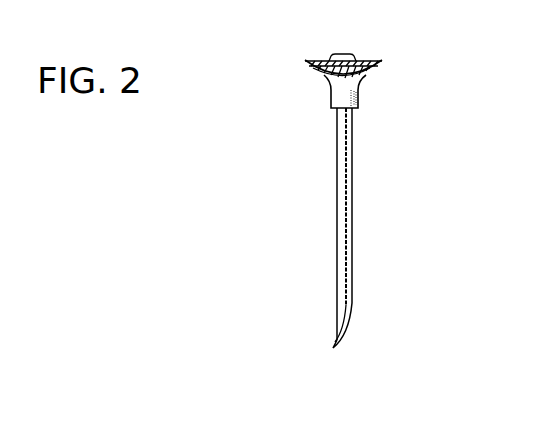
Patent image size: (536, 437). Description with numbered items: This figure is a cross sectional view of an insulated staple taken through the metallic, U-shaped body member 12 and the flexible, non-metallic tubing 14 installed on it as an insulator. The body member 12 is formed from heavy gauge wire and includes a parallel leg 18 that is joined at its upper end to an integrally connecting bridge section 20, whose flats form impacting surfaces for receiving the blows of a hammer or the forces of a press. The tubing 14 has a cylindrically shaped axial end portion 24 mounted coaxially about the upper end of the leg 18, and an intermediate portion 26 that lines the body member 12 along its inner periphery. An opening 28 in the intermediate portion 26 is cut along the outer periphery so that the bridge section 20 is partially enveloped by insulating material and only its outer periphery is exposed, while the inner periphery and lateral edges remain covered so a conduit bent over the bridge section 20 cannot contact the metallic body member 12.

The U-shaped body member 12 is at (336, 228).
The tubing 14 is at (330, 97).
The leg 18 is at (345, 267).
The bridge section 20 is at (367, 61).
The axial end portion 24 is at (358, 92).
The intermediate portion 26 is at (371, 67).
The opening 28 is at (308, 60).